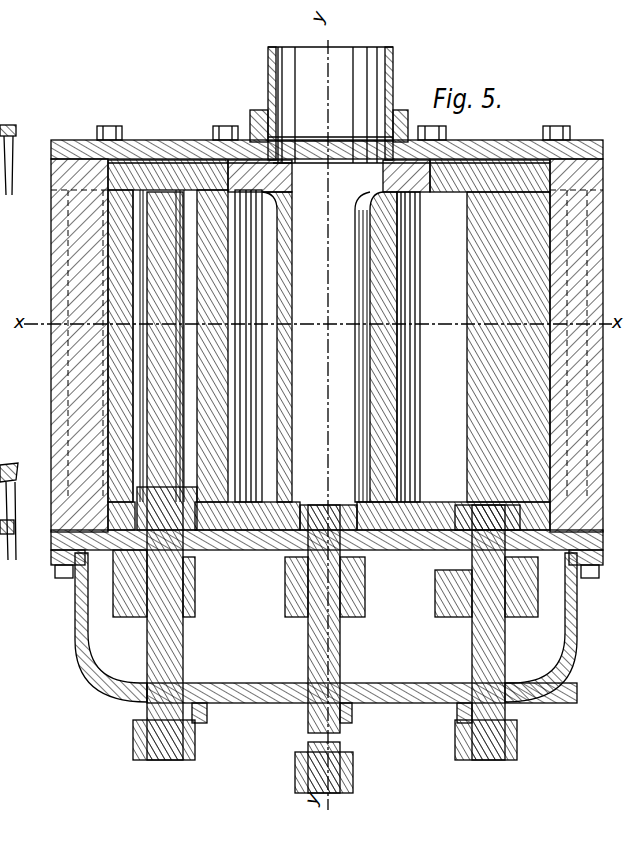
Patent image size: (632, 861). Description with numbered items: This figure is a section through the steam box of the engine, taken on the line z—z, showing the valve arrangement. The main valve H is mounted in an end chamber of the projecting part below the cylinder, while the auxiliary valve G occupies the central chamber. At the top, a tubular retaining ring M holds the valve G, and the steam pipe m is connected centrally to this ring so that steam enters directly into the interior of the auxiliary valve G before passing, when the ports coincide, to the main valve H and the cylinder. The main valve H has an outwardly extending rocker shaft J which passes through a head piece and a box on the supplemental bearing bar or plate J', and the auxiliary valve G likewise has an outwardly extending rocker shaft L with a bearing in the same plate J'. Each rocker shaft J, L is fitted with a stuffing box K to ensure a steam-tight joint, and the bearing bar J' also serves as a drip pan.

The tubular retaining ring M is at (250, 116).
The steam pipe m is at (288, 76).
The auxiliary valve G is at (370, 277).
The main valve H is at (476, 305).
The stuffing box K is at (197, 597).
The rocker shaft L is at (307, 638).
The rocker shaft J is at (323, 652).
The supplemental bearing bar J' is at (345, 649).